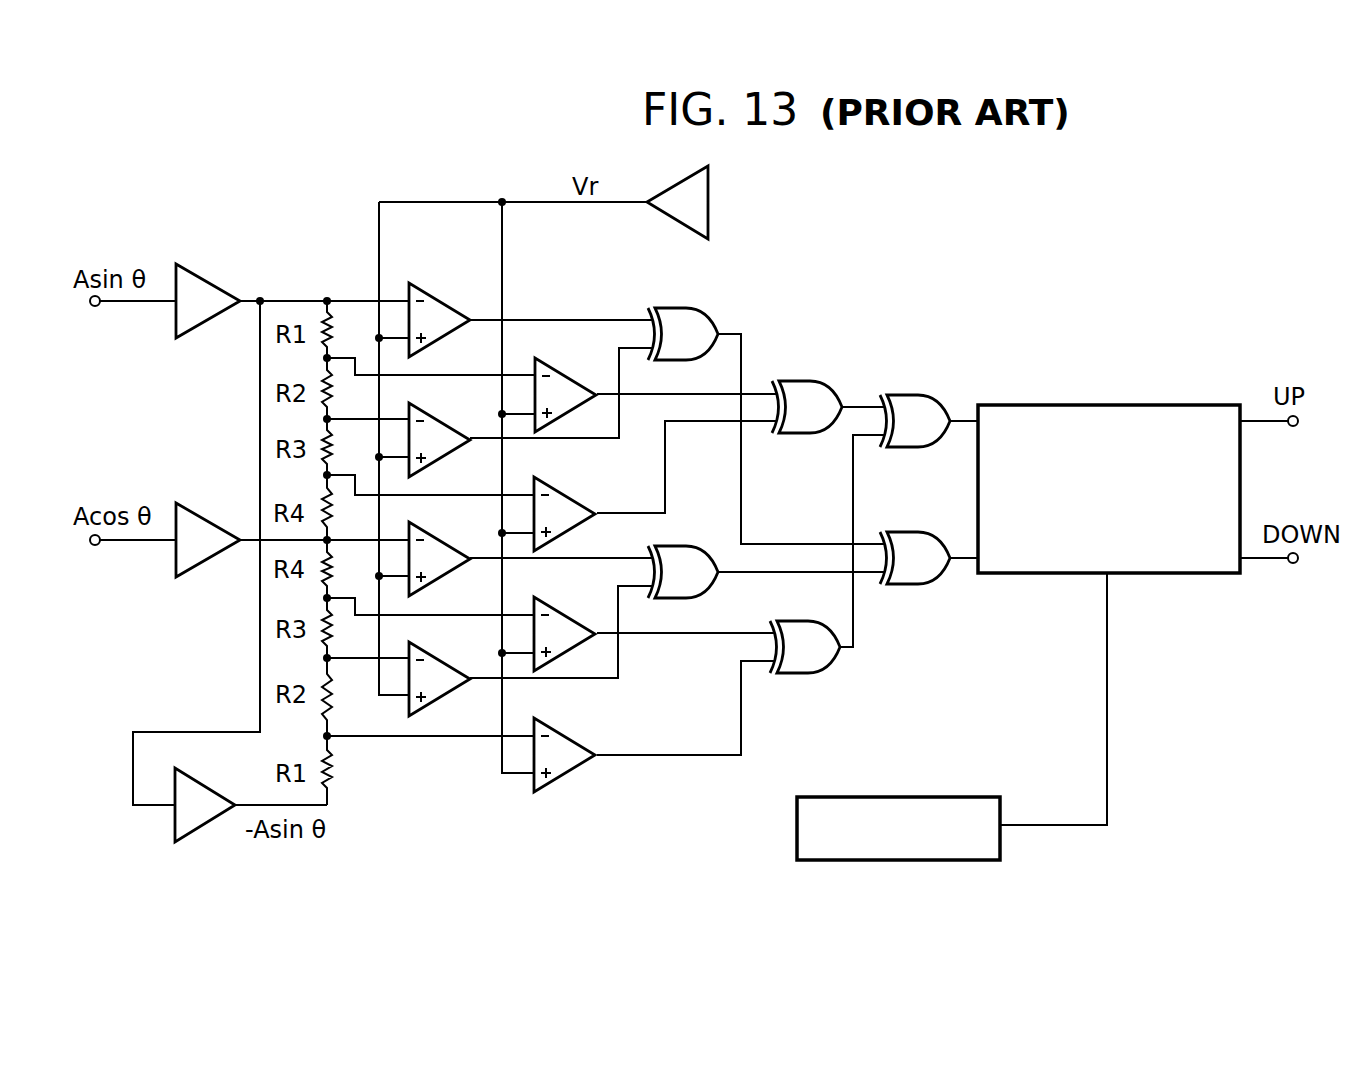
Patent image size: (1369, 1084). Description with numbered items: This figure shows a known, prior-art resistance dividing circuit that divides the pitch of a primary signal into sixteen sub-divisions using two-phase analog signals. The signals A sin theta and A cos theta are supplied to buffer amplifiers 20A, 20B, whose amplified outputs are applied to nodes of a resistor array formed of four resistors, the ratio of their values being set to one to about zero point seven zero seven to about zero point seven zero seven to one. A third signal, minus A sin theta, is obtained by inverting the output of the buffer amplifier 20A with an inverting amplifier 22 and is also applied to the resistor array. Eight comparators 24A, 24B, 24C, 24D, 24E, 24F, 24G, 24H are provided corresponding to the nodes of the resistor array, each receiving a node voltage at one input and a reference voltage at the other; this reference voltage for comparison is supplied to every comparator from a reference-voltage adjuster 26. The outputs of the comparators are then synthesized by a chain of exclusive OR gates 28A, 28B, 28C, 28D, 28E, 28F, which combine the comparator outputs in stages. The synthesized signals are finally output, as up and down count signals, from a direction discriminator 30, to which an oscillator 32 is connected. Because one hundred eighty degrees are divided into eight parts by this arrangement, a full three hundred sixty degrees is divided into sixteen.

The buffer amplifier 20A is at (213, 282).
The buffer amplifier 20B is at (213, 520).
The inverting amplifier 22 is at (186, 843).
The comparator 24A is at (443, 303).
The comparator 24B is at (568, 377).
The comparator 24C is at (427, 413).
The comparator 24D is at (567, 495).
The comparator 24E is at (427, 530).
The comparator 24F is at (567, 615).
The comparator 24G is at (427, 650).
The comparator 24H is at (567, 738).
The reference-voltage adjuster 26 is at (710, 200).
The exclusive OR gate 28A is at (686, 307).
The exclusive OR gate 28B is at (815, 382).
The exclusive OR gate 28C is at (695, 546).
The exclusive OR gate 28D is at (805, 675).
The exclusive OR gate 28E is at (922, 396).
The exclusive OR gate 28F is at (918, 585).
The direction discriminator 30 is at (1145, 404).
The oscillator 32 is at (830, 861).